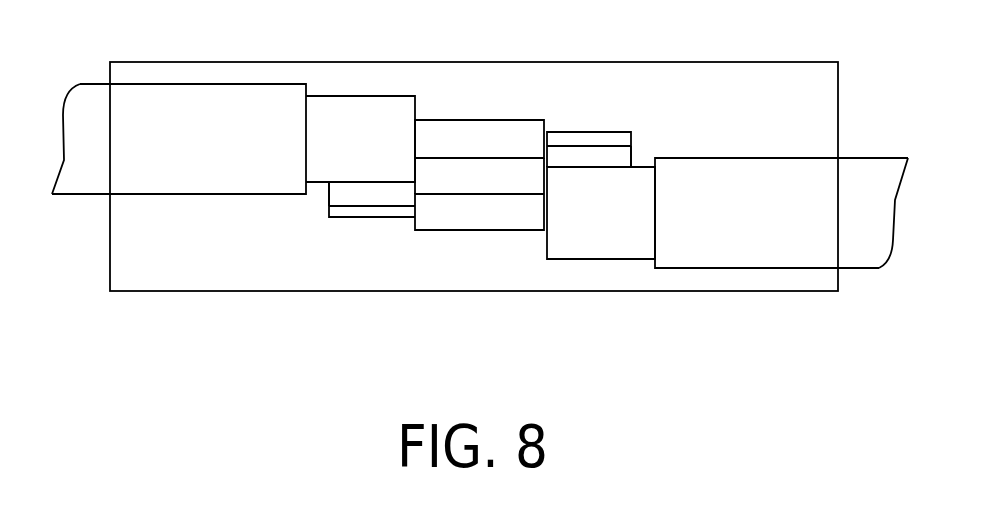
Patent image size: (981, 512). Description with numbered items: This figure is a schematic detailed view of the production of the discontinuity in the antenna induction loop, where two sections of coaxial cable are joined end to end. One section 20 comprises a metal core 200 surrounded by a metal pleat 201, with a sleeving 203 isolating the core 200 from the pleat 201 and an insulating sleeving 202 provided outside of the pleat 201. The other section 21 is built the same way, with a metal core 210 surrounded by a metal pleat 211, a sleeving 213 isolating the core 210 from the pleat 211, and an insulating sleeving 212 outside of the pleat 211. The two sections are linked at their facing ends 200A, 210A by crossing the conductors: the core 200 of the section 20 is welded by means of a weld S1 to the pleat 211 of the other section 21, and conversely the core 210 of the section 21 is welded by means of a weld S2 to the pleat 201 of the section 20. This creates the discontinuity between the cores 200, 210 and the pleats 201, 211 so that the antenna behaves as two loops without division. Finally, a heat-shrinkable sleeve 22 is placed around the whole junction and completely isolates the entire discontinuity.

The section of coaxial cable 20 is at (732, 252).
The metal pleat 201 is at (603, 252).
The insulating sleeving 202 is at (858, 252).
The sleeving 203 is at (497, 215).
The metal core 200 is at (360, 212).
The end of section 200A is at (325, 195).
The section of coaxial cable 21 is at (207, 100).
The metal pleat 211 is at (353, 105).
The insulating sleeving 212 is at (90, 177).
The sleeving 213 is at (477, 140).
The metal core 210 is at (595, 140).
The end of section 210A is at (633, 157).
The heat-shrinkable sleeve 22 is at (175, 270).
The weld S1 is at (390, 196).
The weld S2 is at (563, 157).